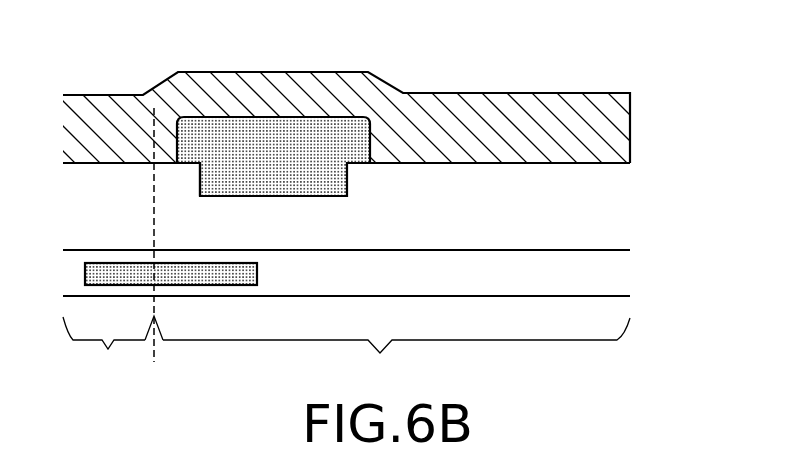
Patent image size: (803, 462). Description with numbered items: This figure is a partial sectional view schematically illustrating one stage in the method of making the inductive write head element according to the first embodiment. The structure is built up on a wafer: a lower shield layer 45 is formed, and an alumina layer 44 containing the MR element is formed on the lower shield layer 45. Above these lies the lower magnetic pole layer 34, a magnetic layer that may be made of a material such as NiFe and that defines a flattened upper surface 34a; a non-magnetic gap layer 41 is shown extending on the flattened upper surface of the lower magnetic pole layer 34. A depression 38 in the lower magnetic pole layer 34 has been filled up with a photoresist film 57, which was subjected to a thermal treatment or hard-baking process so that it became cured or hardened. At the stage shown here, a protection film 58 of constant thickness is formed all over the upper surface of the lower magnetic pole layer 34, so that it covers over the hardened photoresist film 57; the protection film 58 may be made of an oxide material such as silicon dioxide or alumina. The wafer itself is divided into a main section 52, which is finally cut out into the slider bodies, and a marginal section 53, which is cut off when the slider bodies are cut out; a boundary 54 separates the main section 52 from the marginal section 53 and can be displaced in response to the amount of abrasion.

The lower magnetic pole layer 34 is at (72, 165).
The flattened upper surface 34a is at (603, 163).
The depression 38 is at (345, 190).
The non-magnetic gap layer 41 is at (193, 262).
The alumina layer 44 is at (607, 251).
The lower shield layer 45 is at (607, 297).
The main section 52 is at (396, 357).
The marginal section 53 is at (104, 356).
The boundary 54 is at (154, 360).
The photoresist film 57 is at (200, 177).
The protection film 58 is at (248, 75).